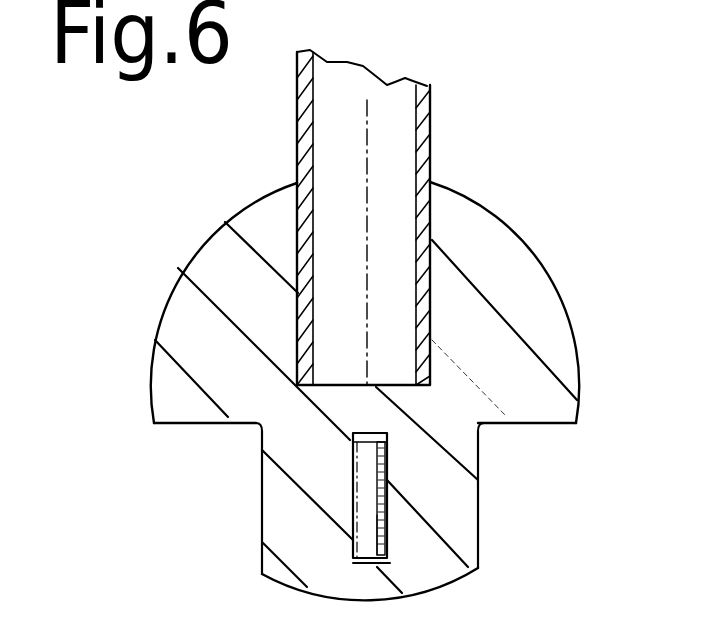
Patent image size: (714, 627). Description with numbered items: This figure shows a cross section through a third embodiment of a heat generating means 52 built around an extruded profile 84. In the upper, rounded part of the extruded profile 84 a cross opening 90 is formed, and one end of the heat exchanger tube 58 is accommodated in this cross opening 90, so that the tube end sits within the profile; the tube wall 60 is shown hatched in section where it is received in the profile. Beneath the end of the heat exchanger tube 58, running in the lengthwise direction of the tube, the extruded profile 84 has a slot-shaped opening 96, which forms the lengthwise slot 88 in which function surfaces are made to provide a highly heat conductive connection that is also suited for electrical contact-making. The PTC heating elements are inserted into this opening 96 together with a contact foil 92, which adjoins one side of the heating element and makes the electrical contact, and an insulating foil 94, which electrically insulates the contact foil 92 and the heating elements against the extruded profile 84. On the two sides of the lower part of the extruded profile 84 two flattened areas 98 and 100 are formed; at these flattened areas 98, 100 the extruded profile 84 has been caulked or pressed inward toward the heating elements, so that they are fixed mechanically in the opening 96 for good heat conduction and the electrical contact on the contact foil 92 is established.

The heat generating means 52 is at (209, 211).
The heat exchanger tube 58 is at (393, 82).
The tube left wall 60 is at (297, 138).
The extruded profile 84 is at (477, 205).
The lengthwise slot 88 is at (353, 485).
The cross opening 90 is at (432, 171).
The contact foil 92 is at (385, 457).
The insulating foil 94 is at (383, 522).
The slot-shaped opening 96 is at (372, 431).
The flattened area 98 is at (262, 493).
The flattened area 100 is at (487, 497).